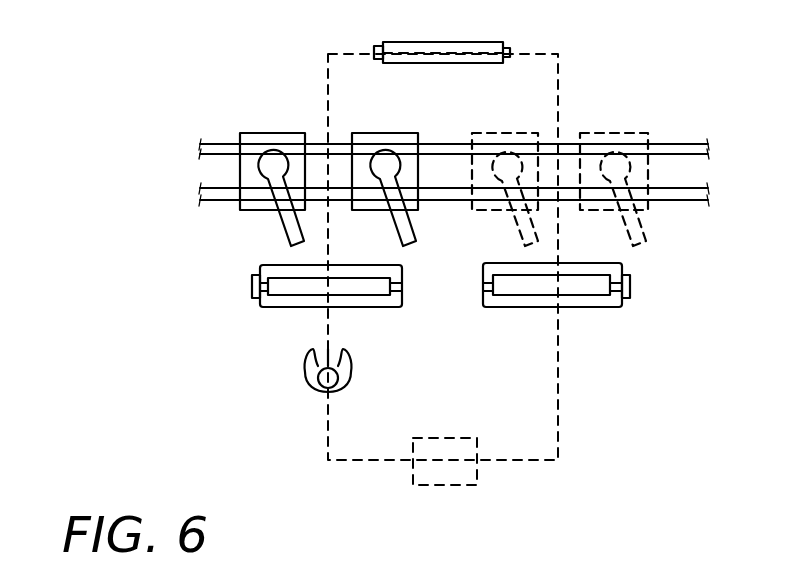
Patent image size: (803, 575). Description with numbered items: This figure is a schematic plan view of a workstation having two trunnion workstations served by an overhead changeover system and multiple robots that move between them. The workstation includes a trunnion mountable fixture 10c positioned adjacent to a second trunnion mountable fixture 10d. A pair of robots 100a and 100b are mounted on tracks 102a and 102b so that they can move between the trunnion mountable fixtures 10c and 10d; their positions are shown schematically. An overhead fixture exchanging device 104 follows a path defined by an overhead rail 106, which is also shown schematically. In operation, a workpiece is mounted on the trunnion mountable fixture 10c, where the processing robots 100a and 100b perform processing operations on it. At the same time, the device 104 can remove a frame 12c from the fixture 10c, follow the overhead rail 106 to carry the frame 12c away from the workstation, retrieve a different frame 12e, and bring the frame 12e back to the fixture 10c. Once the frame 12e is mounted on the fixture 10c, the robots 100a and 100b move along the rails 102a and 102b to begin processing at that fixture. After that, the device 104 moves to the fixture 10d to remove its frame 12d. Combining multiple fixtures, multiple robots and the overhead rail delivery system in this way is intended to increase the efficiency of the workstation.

The robot 100a is at (252, 139).
The robot 100b is at (414, 140).
The track 102a is at (665, 143).
The track 102b is at (682, 198).
The frame 12e is at (494, 42).
The frame 12c is at (280, 284).
The frame 12d is at (601, 278).
The trunnion mountable fixture 10c is at (276, 298).
The trunnion mountable fixture 10d is at (601, 317).
The overhead rail 106 is at (558, 400).
The overhead fixture exchanging device 104 is at (424, 479).